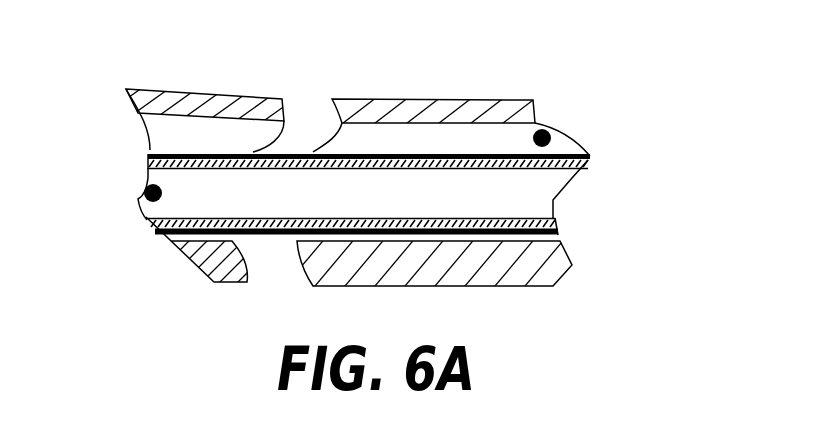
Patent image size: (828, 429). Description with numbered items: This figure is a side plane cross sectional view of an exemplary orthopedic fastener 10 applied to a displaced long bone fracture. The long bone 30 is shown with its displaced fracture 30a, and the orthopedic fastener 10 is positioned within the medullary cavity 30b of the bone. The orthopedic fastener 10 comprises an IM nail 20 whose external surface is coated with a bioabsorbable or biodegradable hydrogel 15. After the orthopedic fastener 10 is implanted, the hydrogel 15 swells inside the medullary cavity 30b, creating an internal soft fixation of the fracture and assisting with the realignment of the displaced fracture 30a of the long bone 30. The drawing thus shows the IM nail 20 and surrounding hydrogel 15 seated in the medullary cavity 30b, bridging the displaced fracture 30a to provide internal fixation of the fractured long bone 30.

The orthopedic fastener 10 is at (138, 202).
The hydrogel 15 is at (438, 163).
The IM nail 20 is at (540, 170).
The long bone 30 is at (183, 90).
The displaced fracture 30a is at (282, 100).
The medullary cavity 30b is at (552, 135).